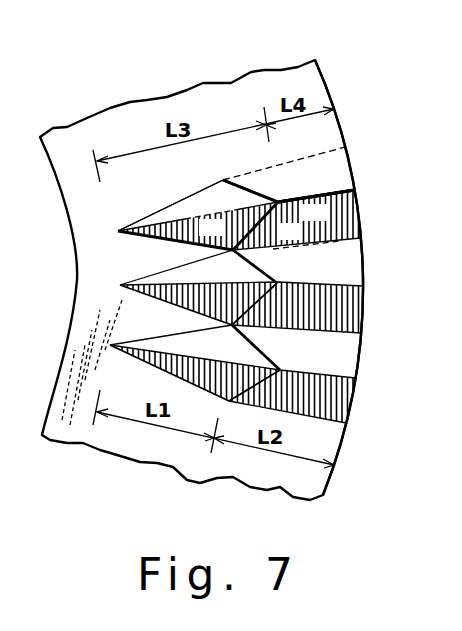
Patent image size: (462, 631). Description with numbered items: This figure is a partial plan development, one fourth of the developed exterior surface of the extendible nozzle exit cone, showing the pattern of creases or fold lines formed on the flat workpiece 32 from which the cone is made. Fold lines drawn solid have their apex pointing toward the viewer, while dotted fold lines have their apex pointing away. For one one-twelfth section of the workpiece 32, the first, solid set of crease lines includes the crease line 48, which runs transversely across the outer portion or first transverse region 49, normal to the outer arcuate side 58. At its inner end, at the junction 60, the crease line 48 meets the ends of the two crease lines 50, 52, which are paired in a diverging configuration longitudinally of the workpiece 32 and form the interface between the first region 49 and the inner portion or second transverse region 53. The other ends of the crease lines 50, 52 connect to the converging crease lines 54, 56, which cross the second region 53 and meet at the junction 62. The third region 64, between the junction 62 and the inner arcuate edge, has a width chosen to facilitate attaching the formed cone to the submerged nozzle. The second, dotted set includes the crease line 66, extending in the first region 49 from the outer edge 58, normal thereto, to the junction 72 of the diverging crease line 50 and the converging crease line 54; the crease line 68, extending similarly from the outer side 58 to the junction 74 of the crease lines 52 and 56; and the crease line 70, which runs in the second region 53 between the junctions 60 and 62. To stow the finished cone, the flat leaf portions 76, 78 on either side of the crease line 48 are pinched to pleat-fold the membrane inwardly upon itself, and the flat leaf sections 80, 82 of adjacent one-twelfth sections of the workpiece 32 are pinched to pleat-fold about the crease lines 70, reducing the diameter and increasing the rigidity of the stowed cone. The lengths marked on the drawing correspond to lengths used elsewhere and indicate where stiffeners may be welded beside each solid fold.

The workpiece 32 is at (283, 80).
The crease line 48 is at (314, 196).
The first transverse region 49 is at (338, 163).
The crease line 50 is at (248, 191).
The crease line 52 is at (258, 224).
The second transverse region 53 is at (170, 212).
The crease line 54 is at (192, 195).
The crease line 56 is at (243, 302).
The outer arcuate side 58 is at (358, 202).
The junction 60 is at (243, 302).
The junction 62 is at (117, 231).
The third region 64 is at (83, 293).
The crease line 66 is at (270, 166).
The crease line 68 is at (332, 243).
The crease line 70 is at (192, 216).
The junction 72 is at (223, 180).
The junction 74 is at (243, 302).
The flat leaf portion 76 is at (341, 175).
The flat leaf portion 78 is at (343, 229).
The flat leaf section 80 is at (150, 236).
The flat leaf section 82 is at (183, 280).